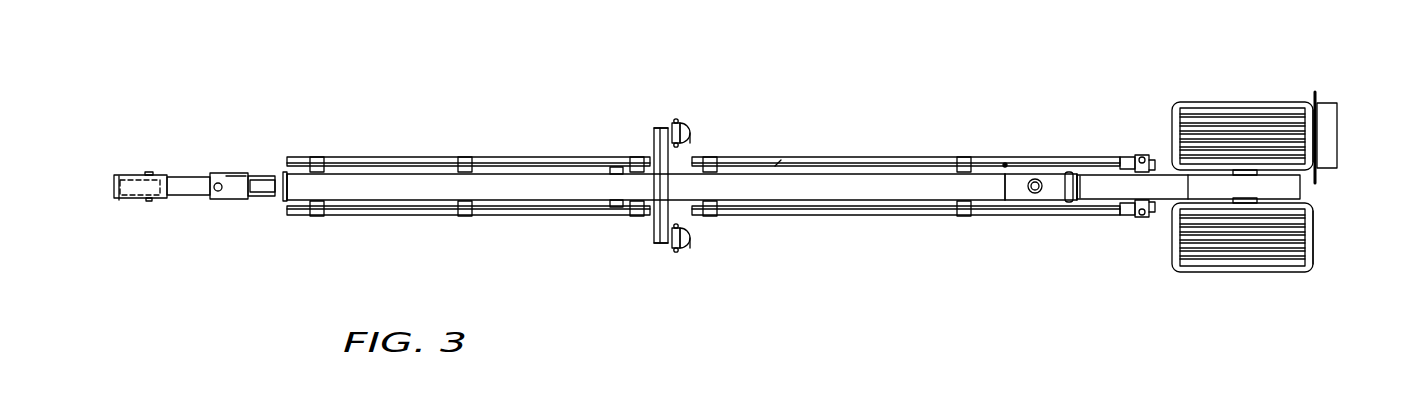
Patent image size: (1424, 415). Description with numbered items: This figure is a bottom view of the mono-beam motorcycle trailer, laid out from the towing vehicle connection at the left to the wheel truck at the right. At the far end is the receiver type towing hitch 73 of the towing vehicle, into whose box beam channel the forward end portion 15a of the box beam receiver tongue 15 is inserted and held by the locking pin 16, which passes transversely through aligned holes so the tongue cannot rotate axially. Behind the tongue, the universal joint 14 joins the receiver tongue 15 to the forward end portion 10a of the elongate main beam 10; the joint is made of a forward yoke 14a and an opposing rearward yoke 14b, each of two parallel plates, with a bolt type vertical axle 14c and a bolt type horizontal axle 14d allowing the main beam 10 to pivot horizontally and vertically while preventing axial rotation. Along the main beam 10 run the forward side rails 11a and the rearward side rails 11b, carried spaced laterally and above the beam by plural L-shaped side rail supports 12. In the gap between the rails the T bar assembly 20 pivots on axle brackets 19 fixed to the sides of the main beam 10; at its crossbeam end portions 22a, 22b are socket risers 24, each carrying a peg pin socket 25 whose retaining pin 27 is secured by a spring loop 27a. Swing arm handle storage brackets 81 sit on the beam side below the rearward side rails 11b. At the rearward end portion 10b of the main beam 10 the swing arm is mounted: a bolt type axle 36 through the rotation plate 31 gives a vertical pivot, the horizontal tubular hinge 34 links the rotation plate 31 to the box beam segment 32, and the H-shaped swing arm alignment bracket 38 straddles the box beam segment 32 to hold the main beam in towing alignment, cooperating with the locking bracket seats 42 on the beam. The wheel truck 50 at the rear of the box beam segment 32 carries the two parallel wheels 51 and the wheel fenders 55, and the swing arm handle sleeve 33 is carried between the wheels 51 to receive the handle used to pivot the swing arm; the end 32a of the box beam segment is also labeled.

The main beam 10 is at (857, 222).
The forward end portion of the main beam 10a is at (273, 183).
The rearward end portion of the main beam 10b is at (995, 188).
The forward side rails 11a is at (375, 215).
The rearward side rails 11b is at (882, 214).
The side rail supports 12 is at (470, 207).
The universal joint 14 is at (250, 228).
The forward yoke 14a is at (228, 185).
The rearward yoke 14b is at (258, 176).
The vertical axle 14c is at (218, 191).
The horizontal axle 14d is at (266, 201).
The receiver tongue 15 is at (188, 183).
The forward end portion of the receiver tongue 15a is at (137, 183).
The locking pin 16 is at (149, 202).
The axle brackets 19 is at (615, 201).
The T bar assembly 20 is at (645, 138).
The end portion of the crossbeam 22a is at (656, 130).
The end portion of the crossbeam 22b is at (656, 240).
The socket riser 24 is at (675, 123).
The peg pin socket 25 is at (692, 124).
The retaining pin 27 is at (678, 119).
The spring loop 27a is at (693, 141).
The rotation plate 31 is at (1020, 182).
The box beam segment 32 is at (1168, 178).
The axle inner end 32a is at (1078, 203).
The swing arm handle sleeve 33 is at (1372, 230).
The horizontal tubular hinge 34 is at (1070, 172).
The bolt type axle 36 is at (1033, 192).
The swing arm alignment bracket 38 is at (1145, 155).
The locking bracket seat 42 is at (1143, 157).
The wheel truck 50 is at (1184, 284).
The wheels 51 is at (1223, 125).
The wheel fenders 55 is at (1308, 264).
The receiver type towing hitch 73 is at (119, 200).
The swing arm handle storage brackets 81 is at (780, 163).